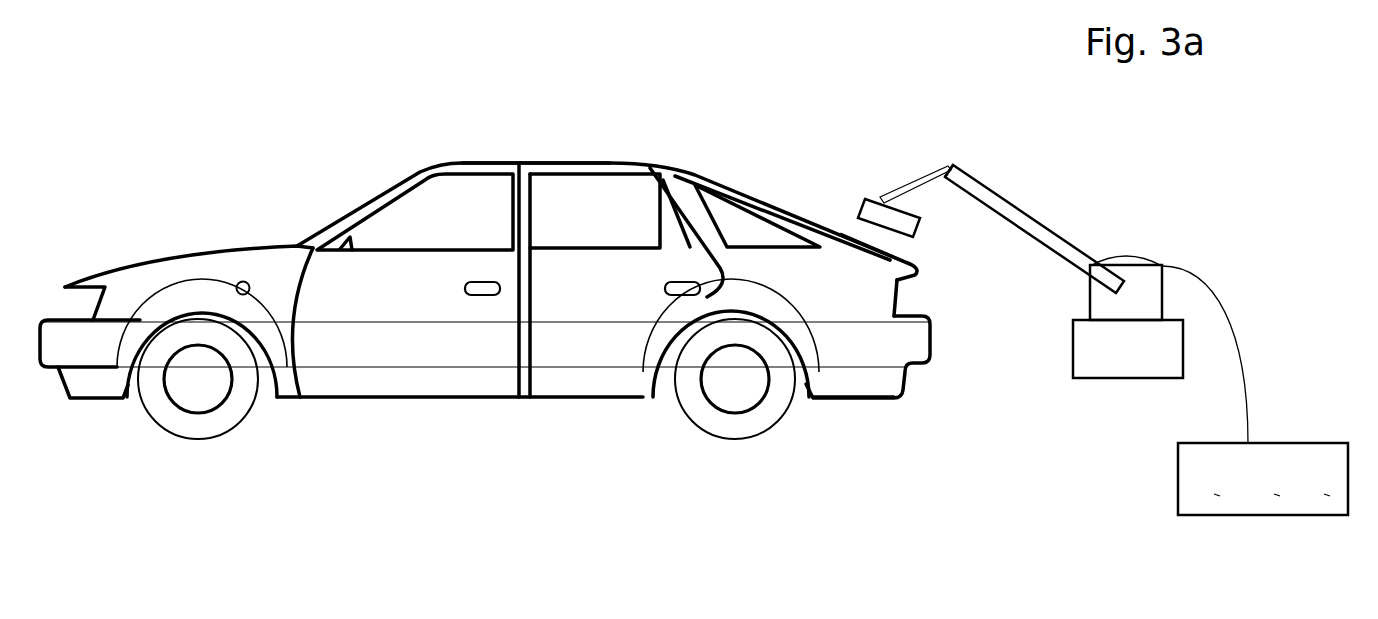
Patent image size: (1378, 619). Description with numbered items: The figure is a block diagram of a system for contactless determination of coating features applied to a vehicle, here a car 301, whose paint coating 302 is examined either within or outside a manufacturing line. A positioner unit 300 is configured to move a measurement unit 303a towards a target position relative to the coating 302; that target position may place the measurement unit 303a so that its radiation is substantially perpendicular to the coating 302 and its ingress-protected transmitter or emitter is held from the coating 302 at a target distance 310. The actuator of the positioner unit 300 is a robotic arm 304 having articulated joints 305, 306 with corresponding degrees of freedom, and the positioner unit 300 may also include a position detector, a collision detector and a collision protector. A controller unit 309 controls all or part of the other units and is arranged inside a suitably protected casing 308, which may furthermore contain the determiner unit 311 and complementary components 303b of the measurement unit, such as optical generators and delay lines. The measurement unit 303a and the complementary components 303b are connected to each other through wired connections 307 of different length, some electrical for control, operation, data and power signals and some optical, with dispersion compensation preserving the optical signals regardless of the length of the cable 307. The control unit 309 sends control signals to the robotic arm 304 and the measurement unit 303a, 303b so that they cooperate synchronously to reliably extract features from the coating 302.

The positioner unit 300 is at (991, 224).
The car 301 is at (303, 206).
The paint coating 302 is at (565, 162).
The measurement unit 303a is at (882, 205).
The complementary components of the measurement unit 303b is at (1215, 495).
The robotic arm 304 is at (1082, 245).
The articulated joint 305 is at (954, 166).
The articulated joint 306 is at (1106, 262).
The wired connections 307 is at (918, 176).
The casing 308 is at (1178, 505).
The controller unit 309 is at (1275, 495).
The target distance 310 is at (880, 248).
The determiner unit 311 is at (1325, 495).